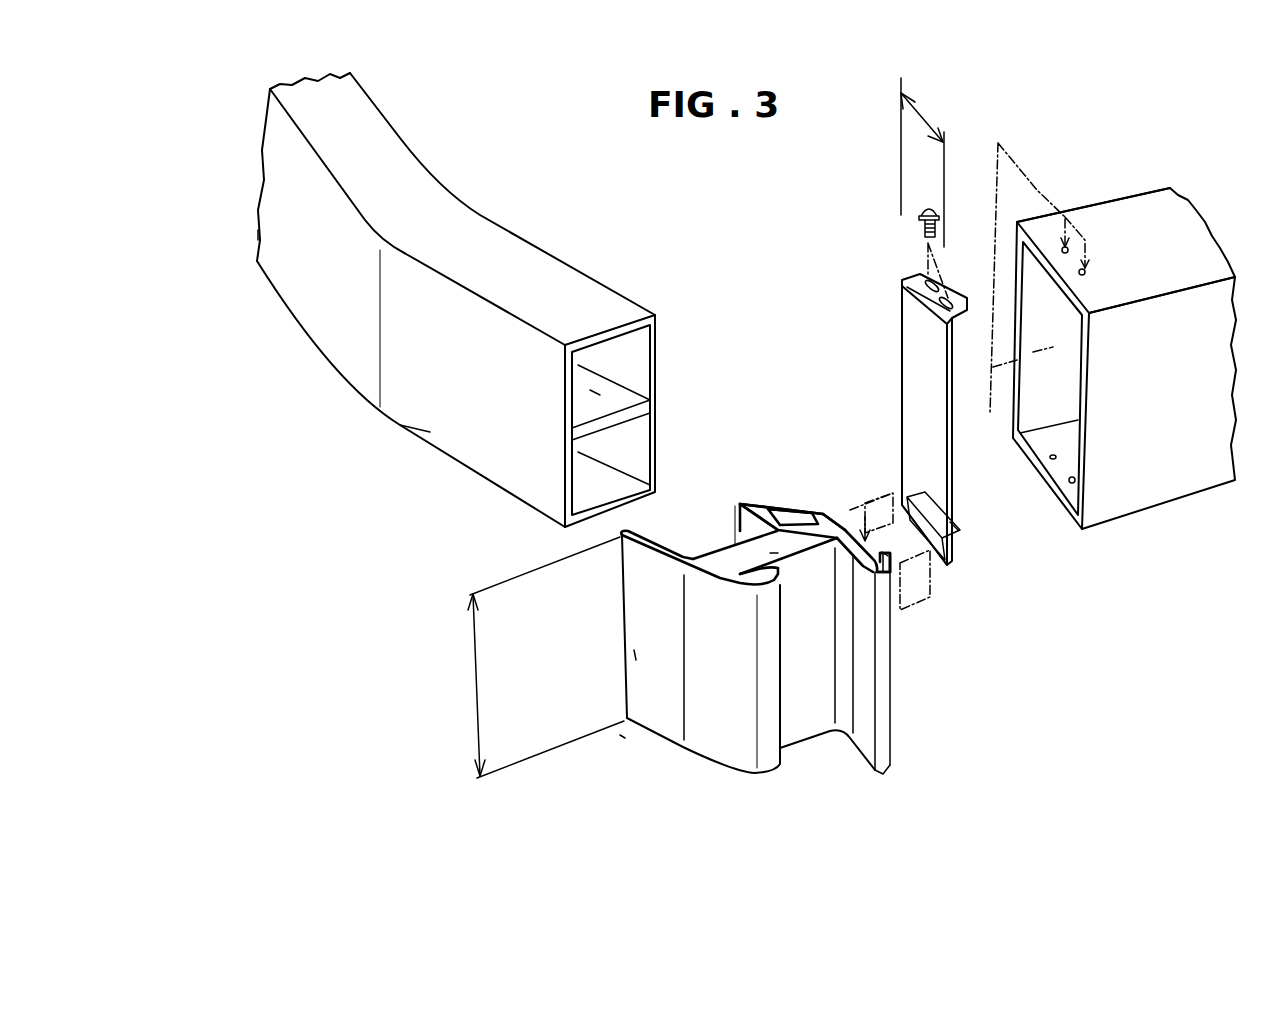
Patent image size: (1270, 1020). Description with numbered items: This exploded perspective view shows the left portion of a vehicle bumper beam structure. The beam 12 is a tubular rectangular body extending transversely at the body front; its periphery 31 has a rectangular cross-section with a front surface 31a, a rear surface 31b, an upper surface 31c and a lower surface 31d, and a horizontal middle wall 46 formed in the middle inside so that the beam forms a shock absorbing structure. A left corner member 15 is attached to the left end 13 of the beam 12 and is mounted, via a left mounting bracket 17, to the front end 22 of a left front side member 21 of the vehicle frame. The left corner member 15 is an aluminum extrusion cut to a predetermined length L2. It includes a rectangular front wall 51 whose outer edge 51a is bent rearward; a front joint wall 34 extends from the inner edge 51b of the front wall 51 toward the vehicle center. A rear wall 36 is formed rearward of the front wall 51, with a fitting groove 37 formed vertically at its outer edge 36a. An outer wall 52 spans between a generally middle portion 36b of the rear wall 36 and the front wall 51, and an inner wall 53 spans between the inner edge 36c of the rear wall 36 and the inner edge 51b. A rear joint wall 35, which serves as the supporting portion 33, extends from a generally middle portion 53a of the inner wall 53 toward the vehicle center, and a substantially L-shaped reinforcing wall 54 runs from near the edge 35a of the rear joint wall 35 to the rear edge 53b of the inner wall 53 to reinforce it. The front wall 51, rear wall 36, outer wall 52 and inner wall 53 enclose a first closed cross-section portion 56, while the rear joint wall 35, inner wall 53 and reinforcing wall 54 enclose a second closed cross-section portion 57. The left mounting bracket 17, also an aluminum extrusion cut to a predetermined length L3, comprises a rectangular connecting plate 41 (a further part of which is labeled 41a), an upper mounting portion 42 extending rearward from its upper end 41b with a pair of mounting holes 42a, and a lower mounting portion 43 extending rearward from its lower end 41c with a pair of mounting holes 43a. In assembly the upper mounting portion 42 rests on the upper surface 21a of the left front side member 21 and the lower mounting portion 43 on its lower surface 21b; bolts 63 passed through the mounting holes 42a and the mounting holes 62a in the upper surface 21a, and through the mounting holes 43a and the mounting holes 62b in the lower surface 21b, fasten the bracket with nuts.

The beam 12 is at (256, 312).
The left end 13 is at (426, 447).
The left corner member 15 is at (622, 739).
The left mounting bracket 17 is at (901, 264).
The left front side member 21 is at (1210, 485).
The upper surface 21a is at (1153, 197).
The lower surface 21b is at (1062, 510).
The front end 22 is at (1128, 510).
The periphery 31 is at (400, 134).
The front surface 31a is at (343, 360).
The rear surface 31b is at (633, 355).
The upper surface 31c is at (488, 228).
The lower surface 31d is at (590, 498).
The supporting portion 33 is at (730, 590).
The front joint wall 34 is at (637, 650).
The rear joint wall 35 is at (743, 532).
The edge 35a is at (778, 525).
The rear wall 36 is at (867, 693).
The outer edge 36a is at (891, 748).
The generally middle portion 36b is at (855, 546).
The inner edge 36c is at (850, 506).
The fitting groove 37 is at (887, 552).
The connecting plate 41 is at (899, 373).
The plate end 41a is at (958, 427).
The upper end 41b is at (908, 307).
The lower end 41c is at (943, 563).
The upper mounting portion 42 is at (946, 297).
The mounting holes 42a is at (966, 315).
The lower mounting portion 43 is at (958, 534).
The mounting holes 43a is at (960, 530).
The horizontal middle wall 46 is at (592, 393).
The front wall 51 is at (723, 743).
The outer edge 51a is at (772, 762).
The inner edge 51b is at (688, 728).
The outer wall 52 is at (818, 713).
The inner wall 53 is at (713, 543).
The generally middle portion 53a is at (762, 505).
The rear edge 53b is at (830, 505).
The reinforcing wall 54 is at (812, 506).
The first closed cross-section portion 56 is at (768, 553).
The second closed cross-section portion 57 is at (794, 512).
The mounting holes 62a is at (1085, 269).
The mounting holes 62b is at (1075, 479).
The bolts 63 is at (926, 207).
The predetermined length L2 is at (617, 603).
The predetermined length L3 is at (924, 165).